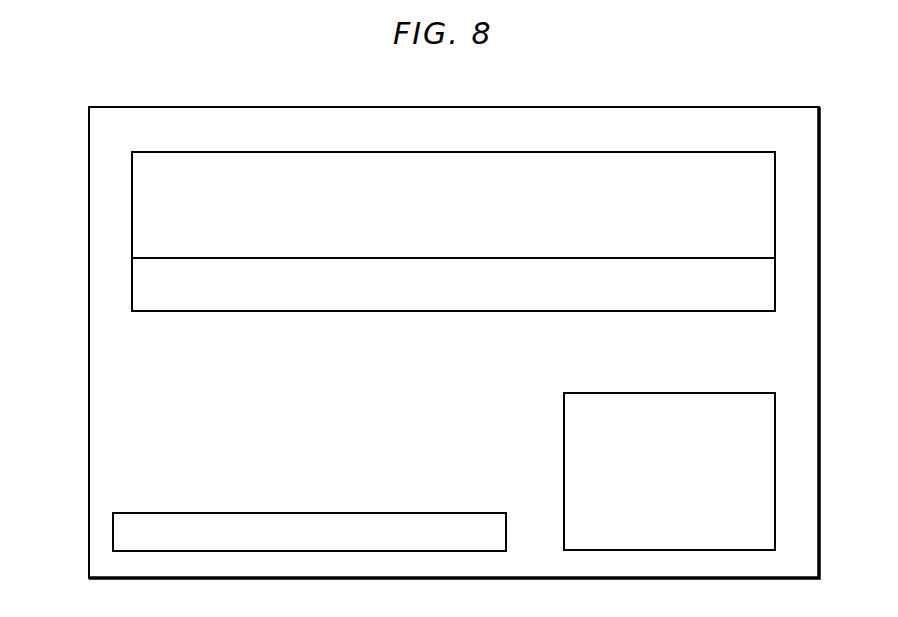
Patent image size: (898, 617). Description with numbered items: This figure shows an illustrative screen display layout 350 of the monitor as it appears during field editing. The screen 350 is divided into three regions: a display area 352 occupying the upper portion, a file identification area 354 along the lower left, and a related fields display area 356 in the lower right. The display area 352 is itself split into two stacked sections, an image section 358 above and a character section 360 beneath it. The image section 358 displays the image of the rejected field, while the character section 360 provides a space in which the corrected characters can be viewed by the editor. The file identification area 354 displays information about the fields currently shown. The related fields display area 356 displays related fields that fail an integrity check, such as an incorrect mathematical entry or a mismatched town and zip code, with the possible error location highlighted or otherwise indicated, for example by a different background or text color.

The screen display layout 350 is at (752, 89).
The display area 352 is at (112, 203).
The file identification area 354 is at (111, 531).
The related fields display area 356 is at (767, 481).
The image section 358 is at (765, 209).
The character section 360 is at (765, 285).